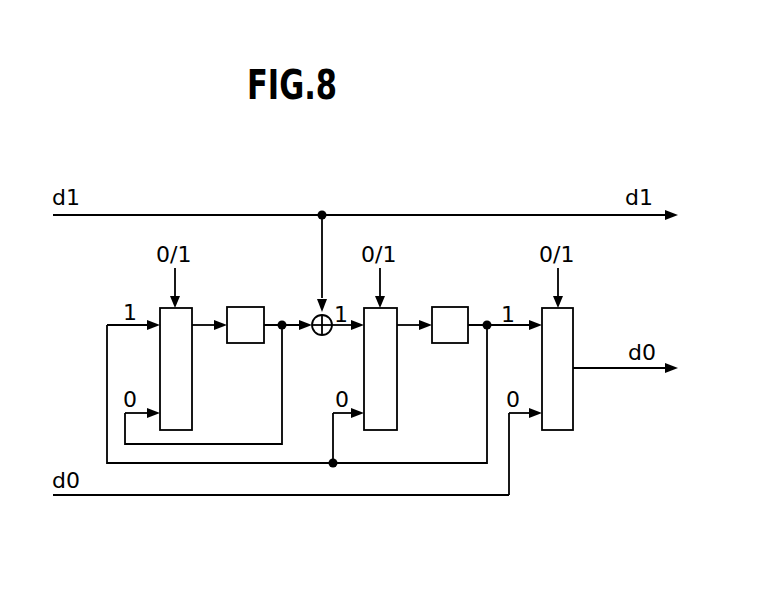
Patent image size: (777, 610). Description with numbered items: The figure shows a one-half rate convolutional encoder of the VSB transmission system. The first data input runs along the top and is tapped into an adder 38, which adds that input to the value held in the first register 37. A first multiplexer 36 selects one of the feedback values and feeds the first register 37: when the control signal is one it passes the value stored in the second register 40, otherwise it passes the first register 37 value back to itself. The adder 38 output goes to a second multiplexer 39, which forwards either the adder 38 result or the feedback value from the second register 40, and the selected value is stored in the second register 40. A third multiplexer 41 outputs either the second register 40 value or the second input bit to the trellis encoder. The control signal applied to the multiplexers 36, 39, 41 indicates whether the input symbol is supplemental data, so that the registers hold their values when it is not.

The first multiplexer 36 is at (184, 412).
The first register 37 is at (240, 312).
The adder 38 is at (322, 336).
The second multiplexer 39 is at (397, 406).
The second register 40 is at (445, 311).
The third multiplexer 41 is at (565, 412).